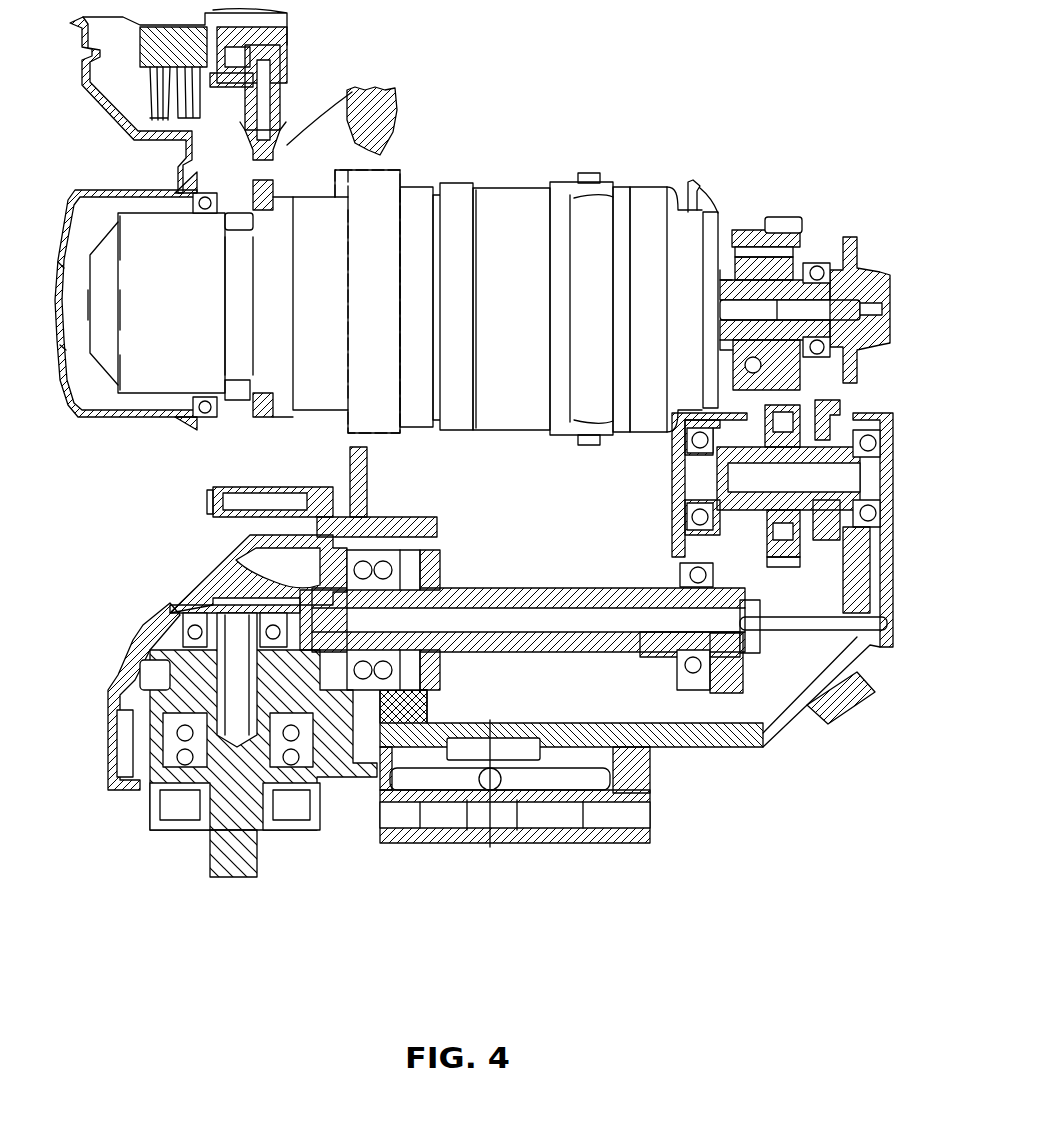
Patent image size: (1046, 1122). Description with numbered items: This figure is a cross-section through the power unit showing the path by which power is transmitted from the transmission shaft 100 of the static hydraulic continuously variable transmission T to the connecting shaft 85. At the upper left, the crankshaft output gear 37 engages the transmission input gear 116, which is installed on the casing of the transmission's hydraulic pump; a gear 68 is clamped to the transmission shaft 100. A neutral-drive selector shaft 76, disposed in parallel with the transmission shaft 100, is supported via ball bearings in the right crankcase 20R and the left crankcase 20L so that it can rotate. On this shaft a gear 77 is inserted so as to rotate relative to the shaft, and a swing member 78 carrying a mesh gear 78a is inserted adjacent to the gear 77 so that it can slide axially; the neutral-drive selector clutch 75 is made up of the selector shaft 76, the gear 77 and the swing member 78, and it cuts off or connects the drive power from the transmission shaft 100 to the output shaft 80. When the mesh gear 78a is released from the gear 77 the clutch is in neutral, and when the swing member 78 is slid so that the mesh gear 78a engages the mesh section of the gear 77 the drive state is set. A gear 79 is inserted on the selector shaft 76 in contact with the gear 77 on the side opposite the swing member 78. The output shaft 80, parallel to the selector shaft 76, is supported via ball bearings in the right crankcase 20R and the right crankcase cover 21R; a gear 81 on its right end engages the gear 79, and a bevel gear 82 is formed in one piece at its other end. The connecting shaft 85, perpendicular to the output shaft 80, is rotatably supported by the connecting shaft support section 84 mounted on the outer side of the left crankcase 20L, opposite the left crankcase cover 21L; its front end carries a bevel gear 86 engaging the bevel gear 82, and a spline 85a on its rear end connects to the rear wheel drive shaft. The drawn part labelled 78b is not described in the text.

The static hydraulic continuously variable transmission T is at (541, 146).
The crankshaft output gear 37 is at (296, 103).
The transmission input gear 116 is at (365, 108).
The transmission shaft 100 is at (711, 250).
The gear 68 is at (784, 220).
The neutral-drive selector clutch 75 is at (888, 412).
The neutral-drive selector shaft 76 is at (690, 462).
The gear 77 is at (782, 558).
The swing member 78 is at (825, 490).
The mesh gear 78a is at (870, 565).
The gear 78b is at (840, 425).
The gear 79 is at (685, 545).
The output shaft 80 is at (528, 600).
The gear 81 is at (673, 563).
The bevel gear 82 is at (308, 556).
The connecting shaft support section 84 is at (150, 662).
The connecting shaft 85 is at (232, 846).
The spline 85a is at (262, 848).
The bevel gear 86 is at (175, 672).
The left crankcase 20L is at (405, 737).
The right crankcase 20R is at (610, 740).
The left crankcase cover 21L is at (119, 428).
The right crankcase cover 21R is at (888, 590).